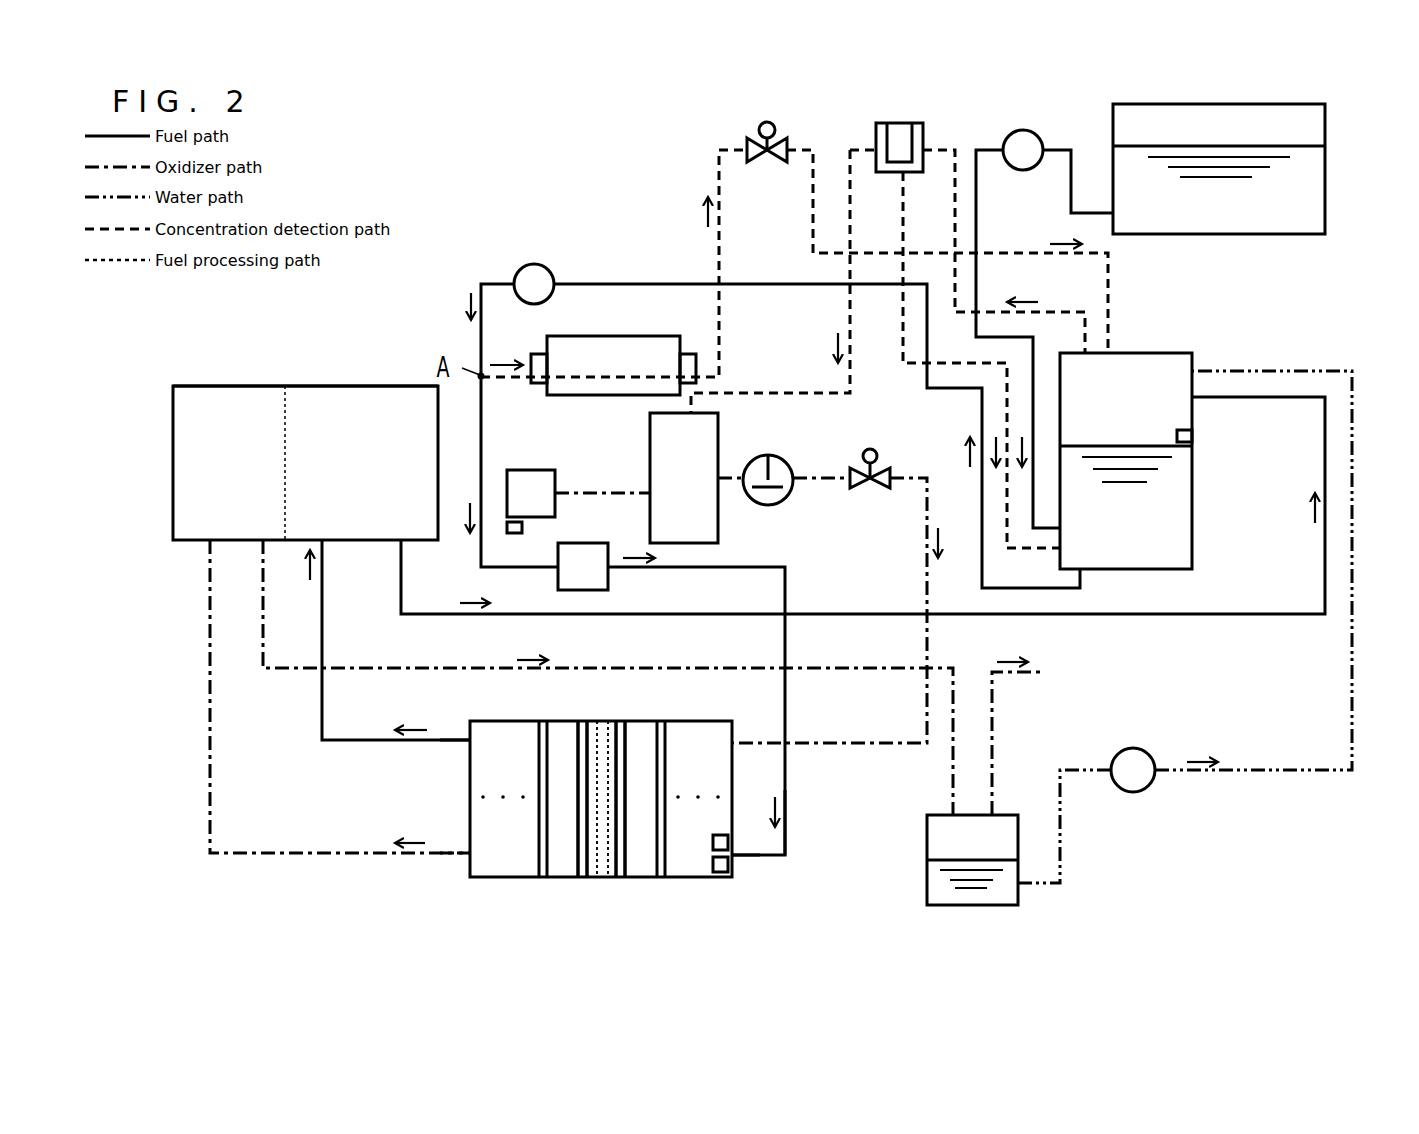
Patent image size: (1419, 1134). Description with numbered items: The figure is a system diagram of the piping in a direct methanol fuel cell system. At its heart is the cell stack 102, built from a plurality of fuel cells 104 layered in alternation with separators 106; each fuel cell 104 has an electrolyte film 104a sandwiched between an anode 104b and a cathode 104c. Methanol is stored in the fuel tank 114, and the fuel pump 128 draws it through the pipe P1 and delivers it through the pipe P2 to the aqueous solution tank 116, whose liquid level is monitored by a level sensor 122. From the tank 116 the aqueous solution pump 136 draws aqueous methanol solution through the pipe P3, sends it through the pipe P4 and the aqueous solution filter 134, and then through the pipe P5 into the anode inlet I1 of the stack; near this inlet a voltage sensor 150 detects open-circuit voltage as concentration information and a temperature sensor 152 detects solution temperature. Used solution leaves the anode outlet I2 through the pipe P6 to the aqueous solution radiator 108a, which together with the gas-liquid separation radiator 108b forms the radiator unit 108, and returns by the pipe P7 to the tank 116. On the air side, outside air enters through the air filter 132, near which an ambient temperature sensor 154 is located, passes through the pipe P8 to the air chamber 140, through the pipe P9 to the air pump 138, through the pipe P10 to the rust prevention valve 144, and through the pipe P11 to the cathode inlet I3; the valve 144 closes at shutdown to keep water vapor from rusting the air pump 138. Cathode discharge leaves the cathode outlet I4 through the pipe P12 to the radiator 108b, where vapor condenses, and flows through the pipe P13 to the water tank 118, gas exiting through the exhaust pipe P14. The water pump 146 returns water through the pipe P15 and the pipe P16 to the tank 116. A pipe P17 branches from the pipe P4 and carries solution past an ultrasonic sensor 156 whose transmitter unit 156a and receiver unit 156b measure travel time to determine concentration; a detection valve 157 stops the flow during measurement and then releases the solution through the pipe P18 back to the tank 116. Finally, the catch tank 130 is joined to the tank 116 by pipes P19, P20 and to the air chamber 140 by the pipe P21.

The cell stack 102 is at (468, 815).
The fuel cell 104 is at (560, 727).
The electrolyte film 104a is at (600, 877).
The anode 104b is at (580, 878).
The cathode 104c is at (613, 878).
The separator 106 is at (583, 727).
The radiator unit 108 is at (248, 333).
The radiator for aqueous solution 108a is at (380, 385).
The radiator for gas-liquid separation 108b is at (237, 385).
The fuel tank 114 is at (1326, 167).
The aqueous solution tank 116 is at (1158, 350).
The water tank 118 is at (927, 848).
The level sensor 122 is at (1192, 436).
The fuel pump 128 is at (1003, 168).
The catch tank 130 is at (883, 173).
The air filter 132 is at (555, 487).
The aqueous solution filter 134 is at (587, 543).
The aqueous solution pump 136 is at (553, 297).
The air pump 138 is at (765, 513).
The air chamber 140 is at (648, 430).
The rust prevention valve 144 is at (882, 470).
The water pump 146 is at (1135, 793).
The voltage sensor 150 is at (713, 840).
The temperature sensor 152 is at (723, 873).
The ambient temperature sensor 154 is at (522, 527).
The ultrasonic sensor 156 is at (622, 336).
The transmitter unit 156a is at (540, 353).
The receiver unit 156b is at (688, 353).
The detection valve 157 is at (781, 165).
The pipe P1 is at (1070, 205).
The pipe P2 is at (977, 262).
The pipe P3 is at (955, 390).
The pipe P4 is at (482, 455).
The pipe P5 is at (785, 790).
The pipe P6 is at (323, 633).
The pipe P7 is at (715, 615).
The pipe P8 is at (617, 488).
The pipe P9 is at (735, 478).
The pipe P10 is at (802, 478).
The pipe P11 is at (927, 600).
The pipe P12 is at (317, 855).
The pipe P13 is at (300, 670).
The exhaust pipe P14 is at (993, 747).
The pipe P15 is at (1062, 865).
The pipe P16 is at (1252, 773).
The pipe P17 is at (722, 350).
The pipe P18 is at (813, 233).
The pipe P19 is at (1057, 310).
The pipe P20 is at (902, 333).
The pipe P21 is at (848, 302).
The anode inlet I1 is at (748, 870).
The anode outlet I2 is at (455, 757).
The cathode inlet I3 is at (835, 626).
The cathode outlet I4 is at (455, 870).